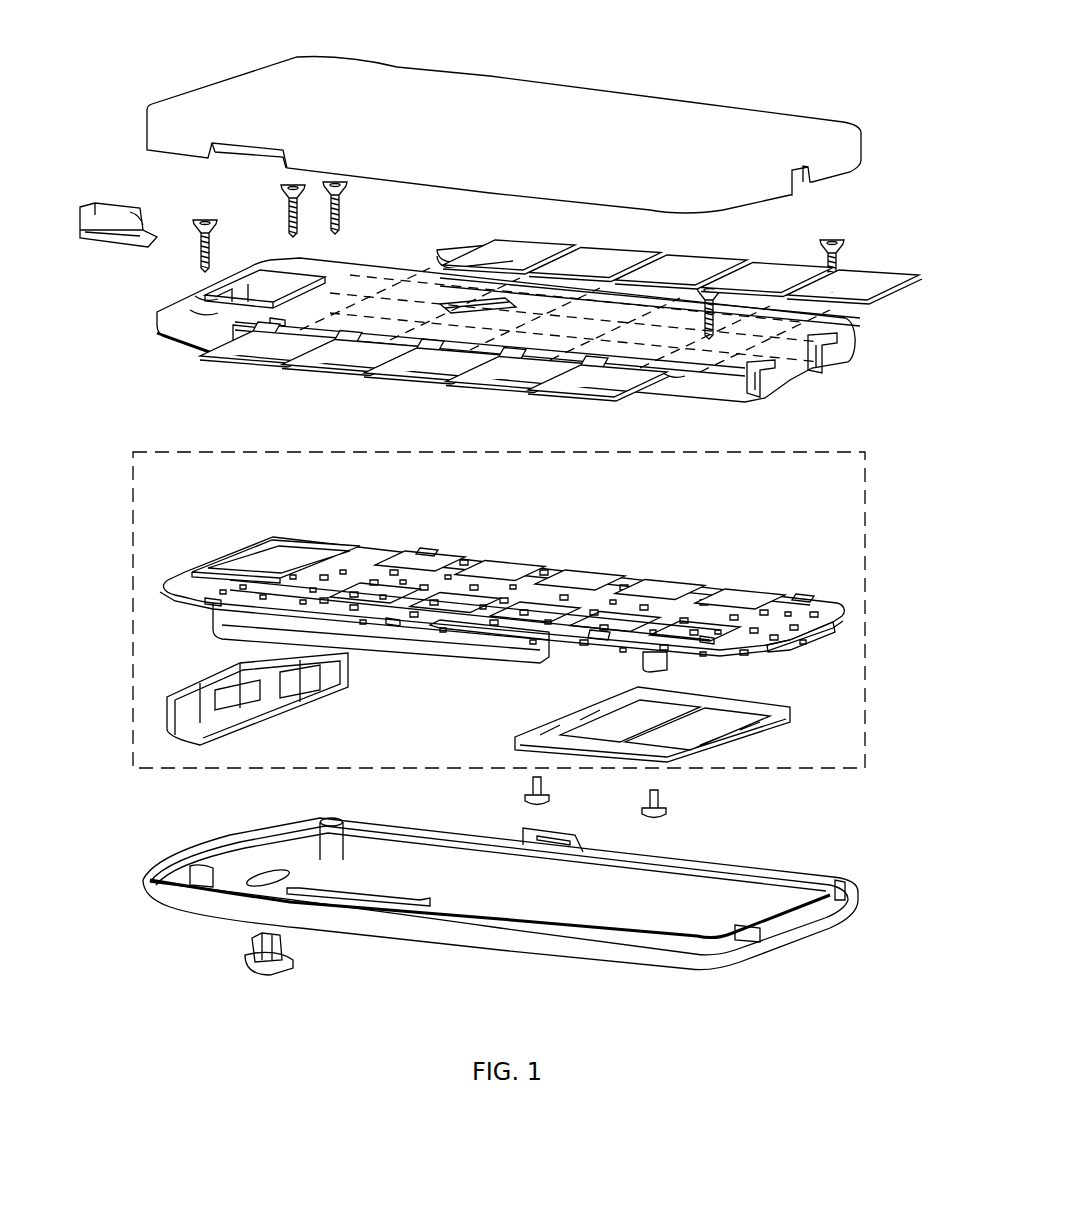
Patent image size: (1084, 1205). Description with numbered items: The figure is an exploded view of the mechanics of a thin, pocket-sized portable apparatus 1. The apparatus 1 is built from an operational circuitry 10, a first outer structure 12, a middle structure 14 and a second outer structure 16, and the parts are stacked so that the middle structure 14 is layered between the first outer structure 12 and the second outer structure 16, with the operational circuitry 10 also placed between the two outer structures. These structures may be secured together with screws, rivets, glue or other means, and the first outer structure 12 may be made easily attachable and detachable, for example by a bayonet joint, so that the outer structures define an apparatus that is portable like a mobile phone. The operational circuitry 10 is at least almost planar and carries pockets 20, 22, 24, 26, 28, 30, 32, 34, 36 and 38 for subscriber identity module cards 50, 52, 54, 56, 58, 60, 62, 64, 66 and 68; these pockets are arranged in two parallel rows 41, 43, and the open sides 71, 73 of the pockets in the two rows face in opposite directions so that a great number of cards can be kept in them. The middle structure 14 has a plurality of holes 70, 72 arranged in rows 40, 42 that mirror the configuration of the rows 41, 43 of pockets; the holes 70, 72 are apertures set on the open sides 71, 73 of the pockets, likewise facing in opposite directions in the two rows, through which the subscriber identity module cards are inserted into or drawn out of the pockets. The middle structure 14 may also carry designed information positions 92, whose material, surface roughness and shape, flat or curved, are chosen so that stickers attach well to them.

The apparatus 1 is at (690, 58).
The operational circuitry 10 is at (199, 452).
The first outer structure 12 is at (481, 131).
The middle structure 14 is at (344, 288).
The second outer structure 16 is at (572, 901).
The pocket 20 is at (353, 585).
The pocket 22 is at (430, 623).
The pocket 24 is at (503, 633).
The pocket 26 is at (597, 637).
The pocket 28 is at (767, 647).
The pocket 30 is at (432, 556).
The pocket 32 is at (518, 558).
The pocket 34 is at (597, 570).
The pocket 36 is at (673, 587).
The pocket 38 is at (753, 593).
The row of holes 40 is at (747, 356).
The row of pockets 41 is at (812, 653).
The row of holes 42 is at (810, 334).
The row of pockets 43 is at (845, 624).
The subscriber identity module card 50 is at (257, 354).
The subscriber identity module card 52 is at (339, 363).
The subscriber identity module card 54 is at (421, 371).
The subscriber identity module card 56 is at (502, 381).
The subscriber identity module card 58 is at (579, 391).
The subscriber identity module card 60 is at (511, 261).
The subscriber identity module card 62 is at (586, 274).
The subscriber identity module card 64 is at (666, 283).
The subscriber identity module card 66 is at (746, 291).
The subscriber identity module card 68 is at (829, 304).
The hole 70 is at (277, 320).
The open side 71 is at (213, 603).
The hole 72 is at (437, 266).
The open side 73 is at (428, 550).
The information position 92 is at (351, 319).